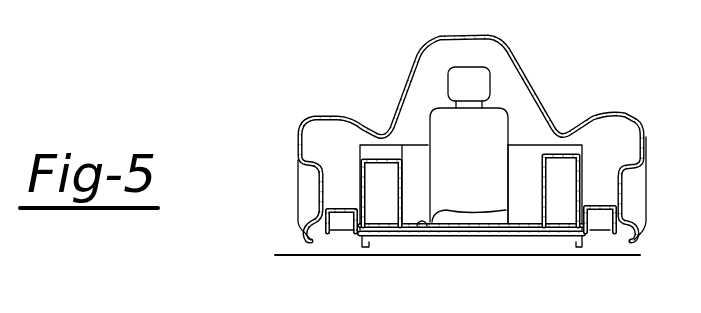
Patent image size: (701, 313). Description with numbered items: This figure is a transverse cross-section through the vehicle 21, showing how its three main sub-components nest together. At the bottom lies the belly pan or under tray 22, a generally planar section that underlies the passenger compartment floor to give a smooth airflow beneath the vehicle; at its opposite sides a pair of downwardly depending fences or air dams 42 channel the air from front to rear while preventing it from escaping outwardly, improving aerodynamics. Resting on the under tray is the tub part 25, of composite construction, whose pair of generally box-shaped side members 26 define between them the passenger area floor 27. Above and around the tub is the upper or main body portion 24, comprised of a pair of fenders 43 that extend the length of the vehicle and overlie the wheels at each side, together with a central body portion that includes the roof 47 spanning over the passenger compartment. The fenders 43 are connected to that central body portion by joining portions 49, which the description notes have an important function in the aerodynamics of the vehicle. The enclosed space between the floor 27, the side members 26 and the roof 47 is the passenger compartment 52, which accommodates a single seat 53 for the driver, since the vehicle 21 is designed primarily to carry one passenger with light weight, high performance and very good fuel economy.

The vehicle 21 is at (409, 48).
The belly pan or under tray 22 is at (407, 243).
The upper or main body portion 24 is at (598, 110).
The tub part 25 is at (412, 140).
The box-shaped side members 26 is at (355, 162).
The passenger area floor 27 is at (423, 228).
The fences or air dams 42 is at (367, 241).
The fenders 43 is at (304, 112).
The roof 47 is at (498, 50).
The joining portions 49 is at (378, 130).
The passenger compartment 52 is at (511, 104).
The seat 53 is at (490, 142).